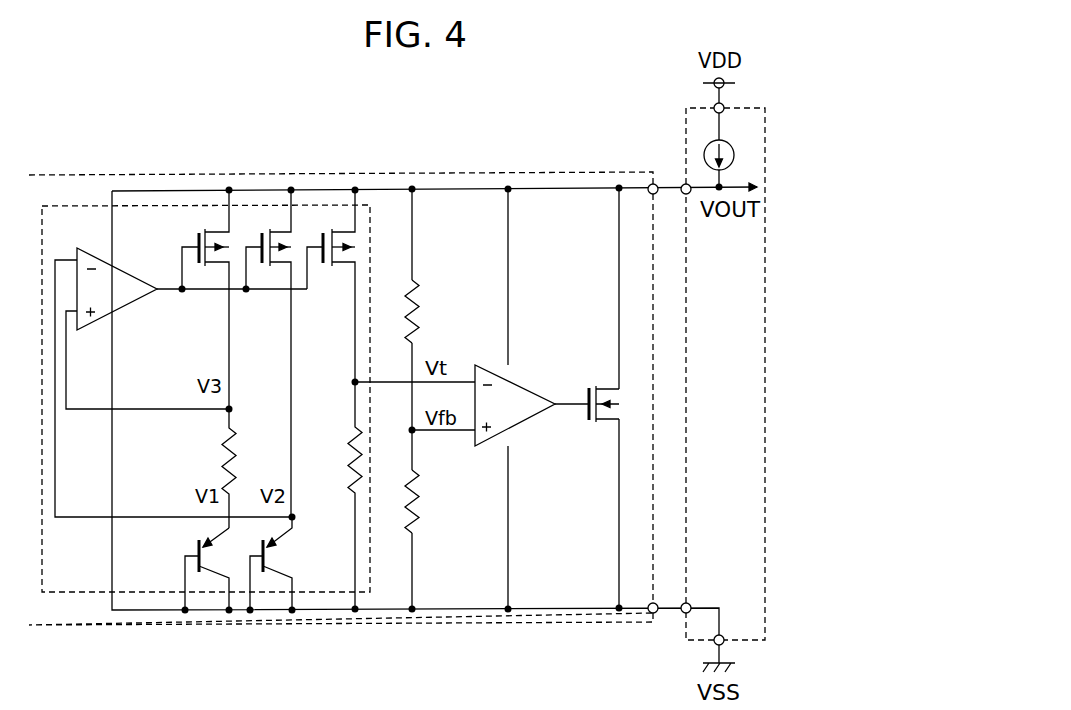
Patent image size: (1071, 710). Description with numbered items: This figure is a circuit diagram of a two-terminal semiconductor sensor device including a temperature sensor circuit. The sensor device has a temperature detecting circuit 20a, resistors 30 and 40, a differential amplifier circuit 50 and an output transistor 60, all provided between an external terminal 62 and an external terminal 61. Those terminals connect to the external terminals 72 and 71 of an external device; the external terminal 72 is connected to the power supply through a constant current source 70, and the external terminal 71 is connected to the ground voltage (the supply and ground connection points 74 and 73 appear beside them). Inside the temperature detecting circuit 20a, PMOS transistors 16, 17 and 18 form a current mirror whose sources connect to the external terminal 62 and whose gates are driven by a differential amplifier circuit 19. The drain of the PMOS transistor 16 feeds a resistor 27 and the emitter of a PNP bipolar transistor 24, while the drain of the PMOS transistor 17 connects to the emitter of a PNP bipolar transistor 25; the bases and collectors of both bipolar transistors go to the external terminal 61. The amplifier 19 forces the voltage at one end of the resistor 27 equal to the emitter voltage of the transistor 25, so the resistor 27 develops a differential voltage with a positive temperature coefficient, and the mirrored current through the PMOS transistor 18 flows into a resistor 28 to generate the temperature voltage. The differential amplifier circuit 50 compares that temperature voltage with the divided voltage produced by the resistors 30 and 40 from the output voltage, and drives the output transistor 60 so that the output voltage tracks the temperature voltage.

The PMOS transistor 16 is at (215, 265).
The PMOS transistor 17 is at (280, 265).
The PMOS transistor 18 is at (343, 265).
The differential amplifier circuit 19 is at (122, 307).
The temperature detecting circuit 20a is at (138, 596).
The PNP bipolar transistor 24 is at (199, 546).
The PNP bipolar transistor 25 is at (263, 548).
The resistor 27 is at (222, 456).
The resistor 28 is at (347, 456).
The resistor 30 is at (424, 320).
The resistor 40 is at (424, 507).
The differential amplifier circuit 50 is at (523, 386).
The output transistor 60 is at (590, 386).
The external terminal 61 is at (649, 614).
The external terminal 62 is at (651, 179).
The constant current source 70 is at (705, 150).
The external terminal 71 is at (682, 614).
The external terminal 72 is at (684, 179).
The ground potential terminal 73 is at (724, 648).
The power supply terminal 74 is at (712, 106).